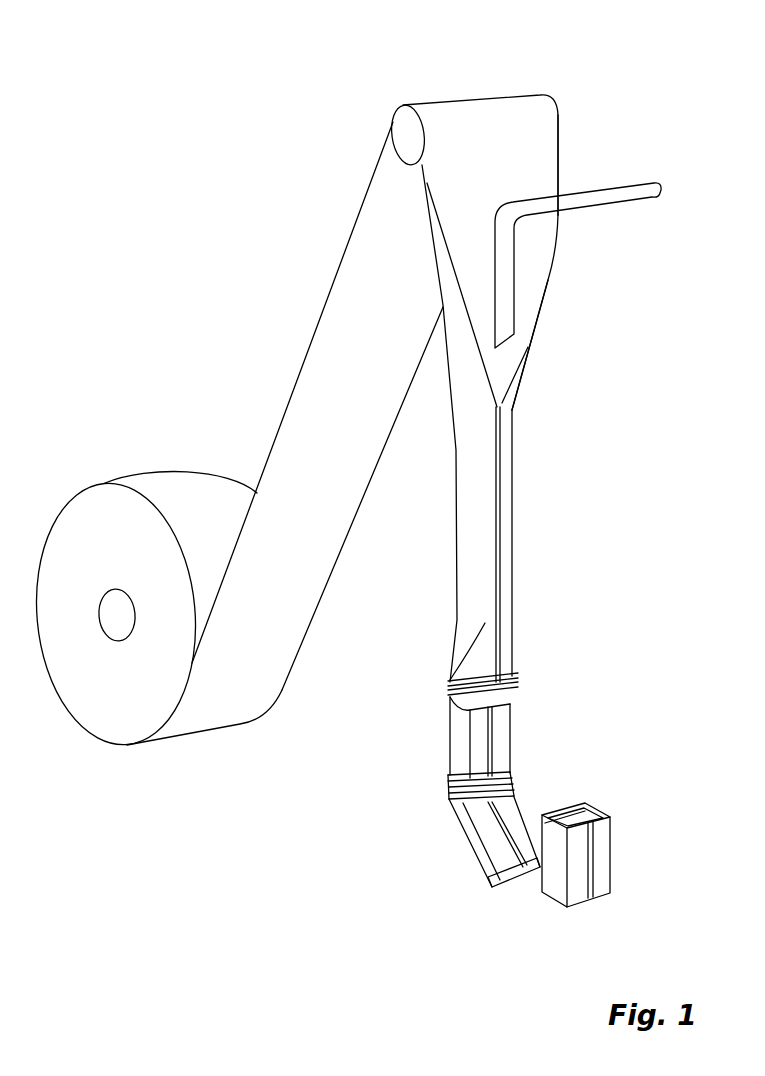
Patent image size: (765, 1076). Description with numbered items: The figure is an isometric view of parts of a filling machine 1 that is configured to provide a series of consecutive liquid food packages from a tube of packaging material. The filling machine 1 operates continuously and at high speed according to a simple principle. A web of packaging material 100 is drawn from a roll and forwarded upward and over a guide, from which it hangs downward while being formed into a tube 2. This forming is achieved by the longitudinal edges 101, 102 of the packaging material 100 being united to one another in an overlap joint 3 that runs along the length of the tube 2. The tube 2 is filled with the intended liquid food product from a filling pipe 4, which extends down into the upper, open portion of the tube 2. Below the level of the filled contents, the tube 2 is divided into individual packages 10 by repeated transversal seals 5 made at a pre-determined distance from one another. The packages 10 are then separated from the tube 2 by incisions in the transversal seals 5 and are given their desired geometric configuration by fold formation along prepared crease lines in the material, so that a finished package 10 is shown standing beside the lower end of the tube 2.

The filling machine 1 is at (627, 83).
The tube 2 is at (467, 523).
The overlap joint 3 is at (505, 437).
The filling pipe 4 is at (615, 193).
The transversal seals 5 is at (518, 682).
The packages 10 is at (600, 857).
The web of packaging material 100 is at (295, 608).
The longitudinal edge 101 is at (555, 250).
The longitudinal edge 102 is at (480, 288).